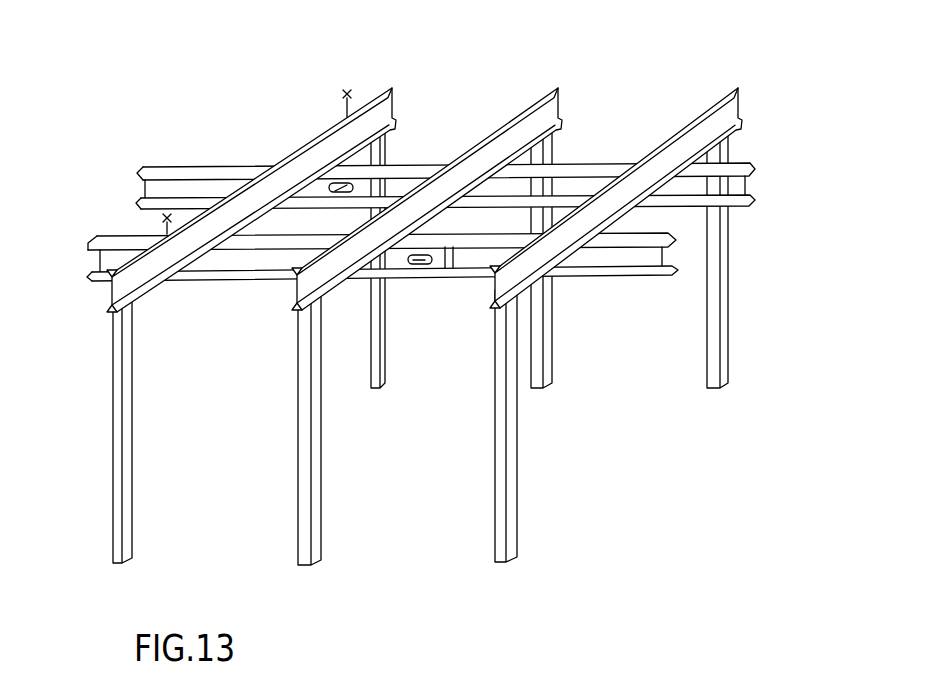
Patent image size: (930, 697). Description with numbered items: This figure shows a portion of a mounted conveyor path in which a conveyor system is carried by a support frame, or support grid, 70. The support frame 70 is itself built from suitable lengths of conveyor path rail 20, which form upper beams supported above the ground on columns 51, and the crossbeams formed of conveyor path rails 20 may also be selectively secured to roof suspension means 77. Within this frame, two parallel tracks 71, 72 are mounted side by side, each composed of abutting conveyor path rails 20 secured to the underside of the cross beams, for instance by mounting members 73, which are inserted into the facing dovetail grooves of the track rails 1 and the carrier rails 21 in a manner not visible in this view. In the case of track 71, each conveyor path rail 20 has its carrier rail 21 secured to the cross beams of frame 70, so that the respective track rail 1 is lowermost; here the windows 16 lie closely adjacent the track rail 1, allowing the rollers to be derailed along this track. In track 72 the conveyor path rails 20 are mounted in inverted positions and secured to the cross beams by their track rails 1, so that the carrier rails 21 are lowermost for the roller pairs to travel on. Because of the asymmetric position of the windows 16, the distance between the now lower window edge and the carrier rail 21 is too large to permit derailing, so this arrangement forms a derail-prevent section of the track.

The track rail 1 is at (389, 230).
The window 16 is at (343, 186).
The conveyor path rail 20 is at (218, 167).
The carrier rail 21 is at (181, 167).
The column 51 is at (133, 457).
The support frame 70 is at (430, 290).
The track 71 is at (771, 176).
The track 72 is at (679, 252).
The mounting member 73 is at (197, 247).
The roof suspension means 77 is at (340, 94).